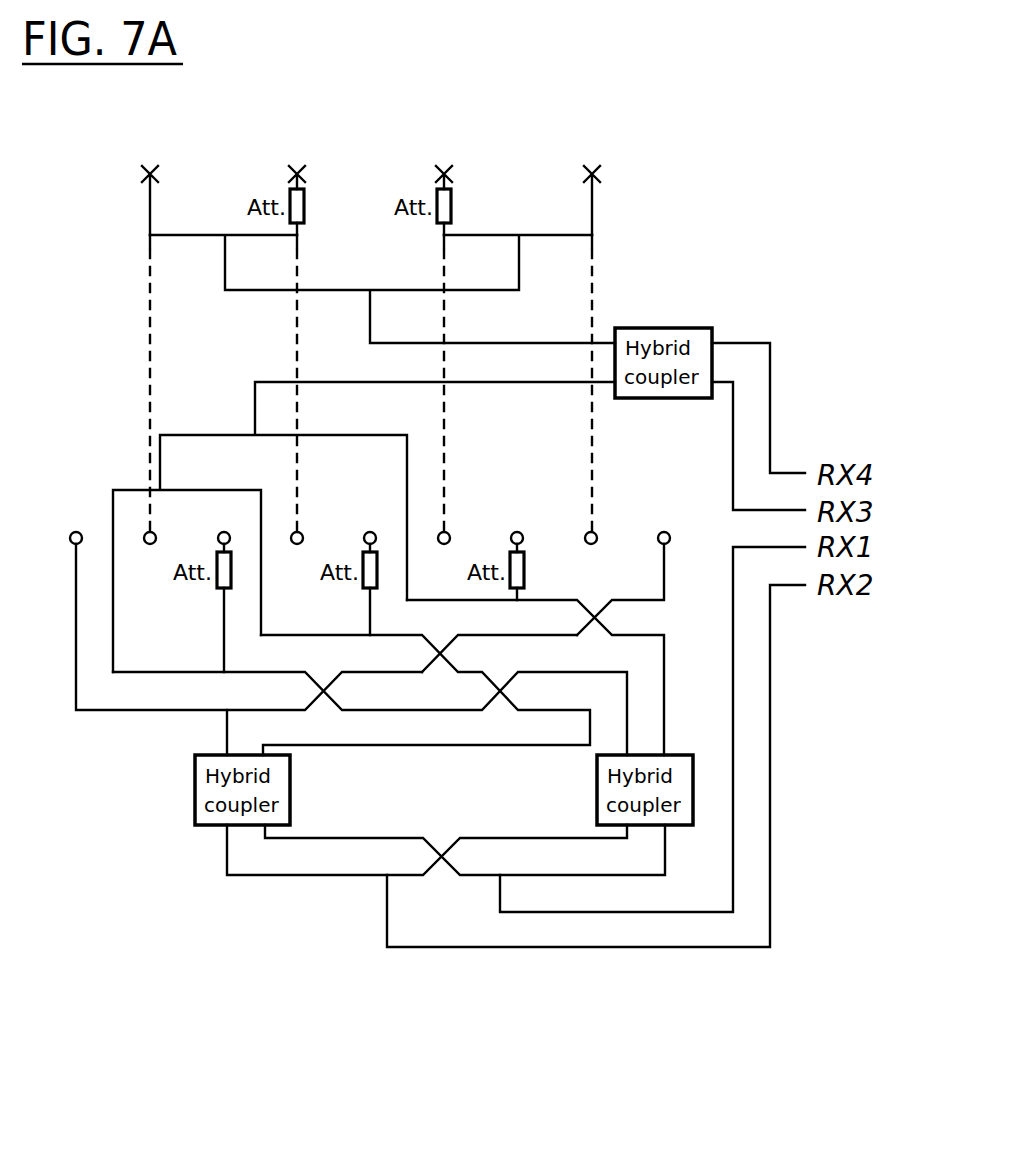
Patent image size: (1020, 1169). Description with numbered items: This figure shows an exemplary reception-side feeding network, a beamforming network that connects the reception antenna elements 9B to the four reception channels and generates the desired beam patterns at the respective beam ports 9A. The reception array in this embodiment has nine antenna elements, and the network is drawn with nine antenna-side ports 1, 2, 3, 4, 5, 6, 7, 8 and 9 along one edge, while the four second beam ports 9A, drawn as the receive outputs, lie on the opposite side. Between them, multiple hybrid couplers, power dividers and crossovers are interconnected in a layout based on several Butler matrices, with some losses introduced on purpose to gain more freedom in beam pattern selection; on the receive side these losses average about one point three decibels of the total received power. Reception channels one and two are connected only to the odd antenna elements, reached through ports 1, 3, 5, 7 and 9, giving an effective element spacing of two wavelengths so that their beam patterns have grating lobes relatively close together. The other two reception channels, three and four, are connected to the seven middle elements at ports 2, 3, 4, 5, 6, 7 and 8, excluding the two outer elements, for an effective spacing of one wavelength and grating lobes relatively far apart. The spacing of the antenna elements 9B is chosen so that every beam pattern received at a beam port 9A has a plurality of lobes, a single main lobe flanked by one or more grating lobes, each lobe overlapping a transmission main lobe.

The main lobe 1 is at (85, 526).
The main lobe 2 is at (159, 526).
The grating lobes 3 is at (232, 526).
The antenna port 4 is at (306, 526).
The antenna port 5 is at (379, 526).
The antenna port 6 is at (452, 526).
The antenna port 7 is at (526, 526).
The antenna port 8 is at (600, 526).
The antenna port 9 is at (673, 526).
The second beam ports 9A is at (842, 608).
The antenna elements 9B is at (75, 528).